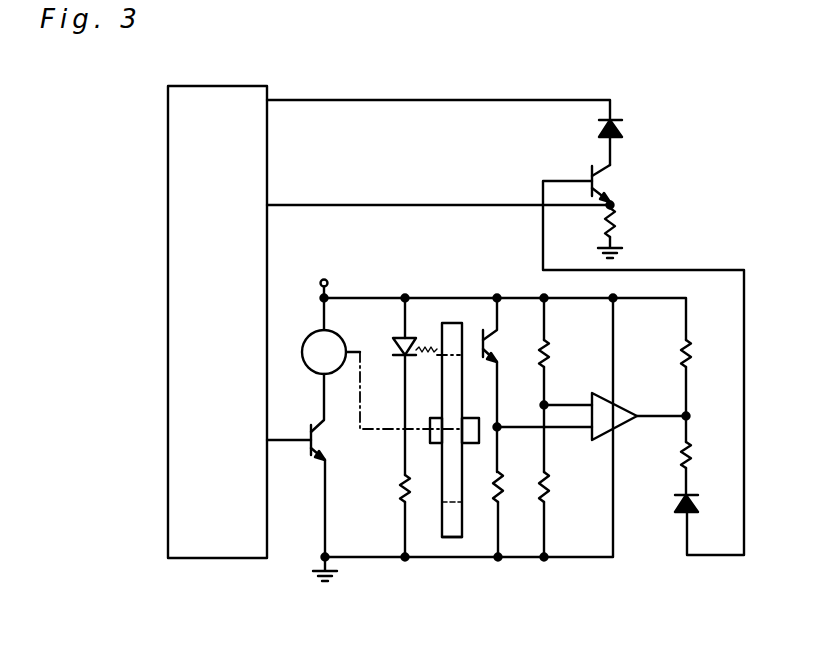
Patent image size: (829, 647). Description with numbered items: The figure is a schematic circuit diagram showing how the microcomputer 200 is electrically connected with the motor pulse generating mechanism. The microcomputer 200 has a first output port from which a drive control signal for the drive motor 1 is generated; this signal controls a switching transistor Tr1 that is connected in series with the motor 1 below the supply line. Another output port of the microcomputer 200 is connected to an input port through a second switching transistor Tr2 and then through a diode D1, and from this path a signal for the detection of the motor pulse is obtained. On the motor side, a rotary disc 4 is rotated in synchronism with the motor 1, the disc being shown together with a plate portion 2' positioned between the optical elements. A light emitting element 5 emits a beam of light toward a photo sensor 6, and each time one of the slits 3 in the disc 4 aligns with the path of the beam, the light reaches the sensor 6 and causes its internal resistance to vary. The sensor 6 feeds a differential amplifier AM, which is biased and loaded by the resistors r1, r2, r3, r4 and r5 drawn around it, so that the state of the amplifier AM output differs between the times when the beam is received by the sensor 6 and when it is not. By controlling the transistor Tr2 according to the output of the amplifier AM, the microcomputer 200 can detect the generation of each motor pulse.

The microcomputer 200 is at (206, 92).
The diode D1 is at (622, 128).
The switching transistor Tr2 is at (606, 190).
The drive motor 1 is at (316, 331).
The switching transistor Tr1 is at (328, 441).
The light emitting element 5 is at (410, 340).
The photo sensor 6 is at (497, 336).
The slit plate 2' is at (459, 430).
The slits 3 is at (443, 514).
The rotary disc 4 is at (459, 483).
The resistor r1 is at (555, 353).
The resistor r2 is at (557, 481).
The resistor r3 is at (511, 492).
The resistor r4 is at (700, 379).
The resistor r5 is at (700, 455).
The differential amplifier AM is at (601, 407).